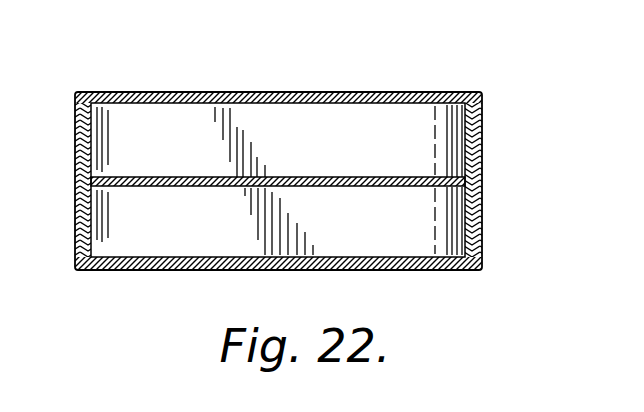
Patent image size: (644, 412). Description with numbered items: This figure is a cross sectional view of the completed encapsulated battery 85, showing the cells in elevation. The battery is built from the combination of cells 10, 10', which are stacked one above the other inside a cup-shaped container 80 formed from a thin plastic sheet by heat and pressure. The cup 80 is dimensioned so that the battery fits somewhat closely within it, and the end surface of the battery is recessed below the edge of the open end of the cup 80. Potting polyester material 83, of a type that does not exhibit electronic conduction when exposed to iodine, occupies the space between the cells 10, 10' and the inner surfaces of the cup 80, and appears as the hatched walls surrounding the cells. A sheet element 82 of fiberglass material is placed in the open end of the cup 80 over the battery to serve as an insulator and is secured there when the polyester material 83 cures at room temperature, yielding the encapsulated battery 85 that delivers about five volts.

The encapsulated battery 85 is at (430, 79).
The cup-shaped container 80 is at (76, 104).
The sheet element of fiberglass material 82 is at (284, 93).
The polyester material 83 is at (76, 140).
The cell 10' is at (279, 114).
The cell 10 is at (279, 246).